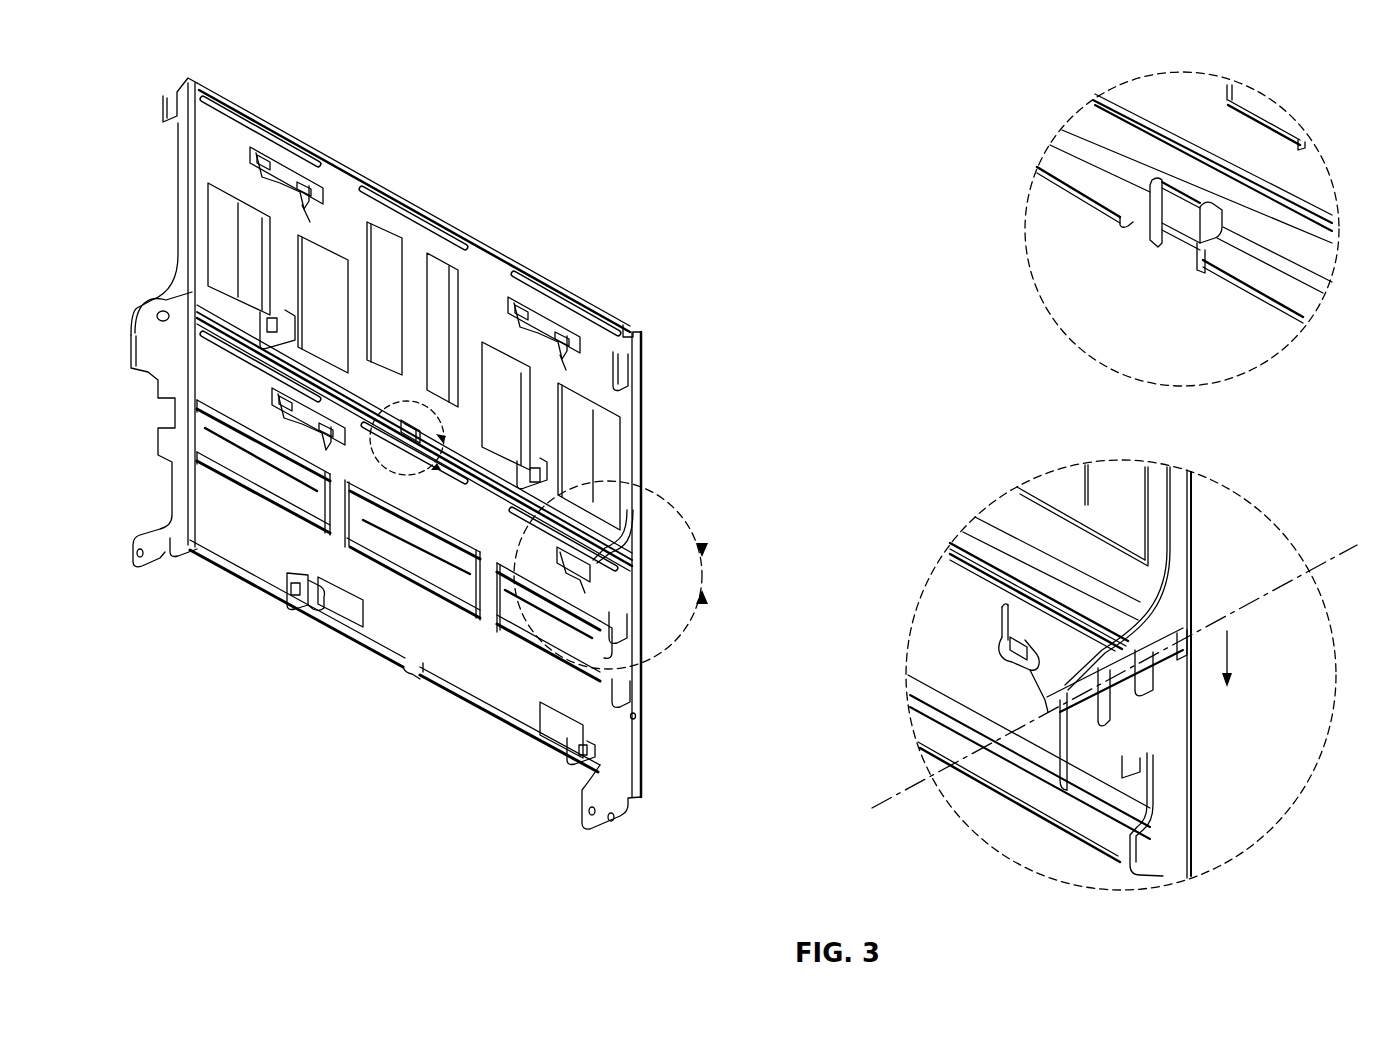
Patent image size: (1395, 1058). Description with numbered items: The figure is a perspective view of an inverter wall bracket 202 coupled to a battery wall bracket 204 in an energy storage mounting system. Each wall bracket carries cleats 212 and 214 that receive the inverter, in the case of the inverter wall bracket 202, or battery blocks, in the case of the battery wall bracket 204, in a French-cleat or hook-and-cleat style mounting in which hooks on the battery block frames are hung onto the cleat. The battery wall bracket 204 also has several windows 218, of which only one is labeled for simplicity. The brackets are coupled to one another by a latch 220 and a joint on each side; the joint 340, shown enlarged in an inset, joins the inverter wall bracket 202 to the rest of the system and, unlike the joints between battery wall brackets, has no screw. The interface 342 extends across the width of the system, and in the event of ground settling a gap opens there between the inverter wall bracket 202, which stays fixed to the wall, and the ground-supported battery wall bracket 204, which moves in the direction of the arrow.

The inverter wall bracket 202 is at (835, 379).
The battery wall bracket 204 is at (700, 714).
The cleat 212 is at (288, 183).
The cleat 214 is at (543, 325).
The window 218 is at (268, 477).
The latch 220 is at (420, 470).
The joint 340 is at (697, 612).
The interface 342 is at (1372, 457).